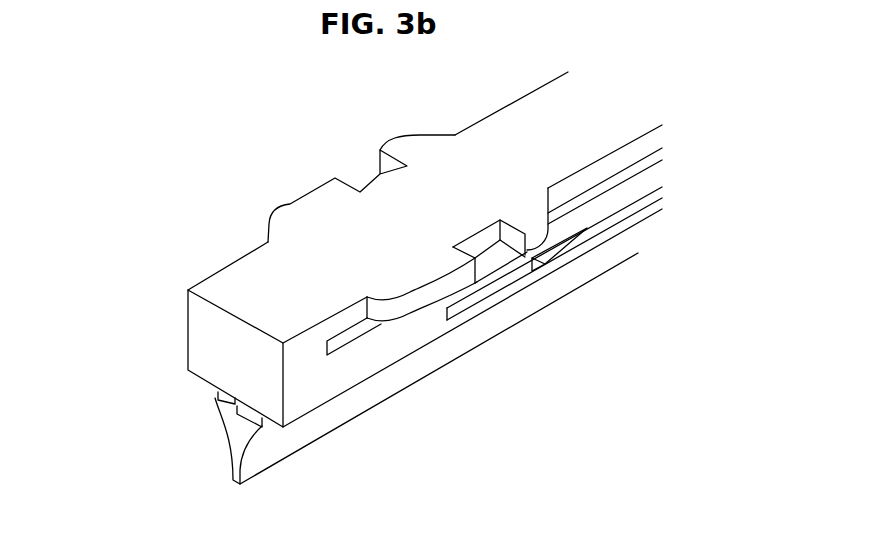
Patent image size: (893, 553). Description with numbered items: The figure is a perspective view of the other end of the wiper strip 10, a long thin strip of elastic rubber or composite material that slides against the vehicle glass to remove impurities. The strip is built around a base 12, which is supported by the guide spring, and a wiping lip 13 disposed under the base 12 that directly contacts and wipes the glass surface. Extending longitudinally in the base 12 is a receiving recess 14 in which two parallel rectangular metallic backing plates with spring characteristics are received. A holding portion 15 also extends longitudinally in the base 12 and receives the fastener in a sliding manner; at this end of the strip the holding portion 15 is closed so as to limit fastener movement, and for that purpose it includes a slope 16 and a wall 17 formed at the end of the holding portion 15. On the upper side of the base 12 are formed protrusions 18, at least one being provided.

The wiper strip 10 is at (109, 184).
The base 12 is at (199, 318).
The wiping lip 13 is at (238, 433).
The receiving recess 14 is at (345, 337).
The holding portion 15 is at (587, 233).
The slope 16 is at (548, 270).
The wall 17 is at (445, 318).
The protrusion 18 is at (380, 160).